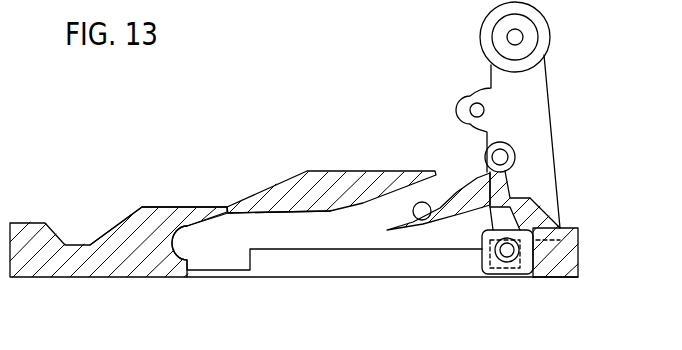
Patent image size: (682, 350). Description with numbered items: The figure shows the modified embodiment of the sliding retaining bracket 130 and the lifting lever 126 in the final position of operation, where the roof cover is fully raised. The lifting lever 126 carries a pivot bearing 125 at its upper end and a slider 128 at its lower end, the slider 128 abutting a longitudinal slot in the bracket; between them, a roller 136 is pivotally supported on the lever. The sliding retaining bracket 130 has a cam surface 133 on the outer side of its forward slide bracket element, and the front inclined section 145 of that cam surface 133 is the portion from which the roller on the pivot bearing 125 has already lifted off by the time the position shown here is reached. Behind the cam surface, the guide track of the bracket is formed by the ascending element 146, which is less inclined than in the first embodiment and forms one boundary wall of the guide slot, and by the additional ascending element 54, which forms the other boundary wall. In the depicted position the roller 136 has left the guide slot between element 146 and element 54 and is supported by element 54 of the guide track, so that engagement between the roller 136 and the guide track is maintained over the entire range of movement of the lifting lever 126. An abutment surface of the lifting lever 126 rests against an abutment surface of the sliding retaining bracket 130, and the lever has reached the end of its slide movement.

The pivot bearing 125 is at (515, 36).
The lifting lever 126 is at (533, 133).
The slider 128 is at (514, 274).
The sliding retaining bracket 130 is at (53, 260).
The cam surface 133 is at (143, 207).
The roller 136 is at (486, 151).
The inclined section 145 is at (277, 185).
The ascending element 146 is at (380, 206).
The element 54 is at (413, 220).